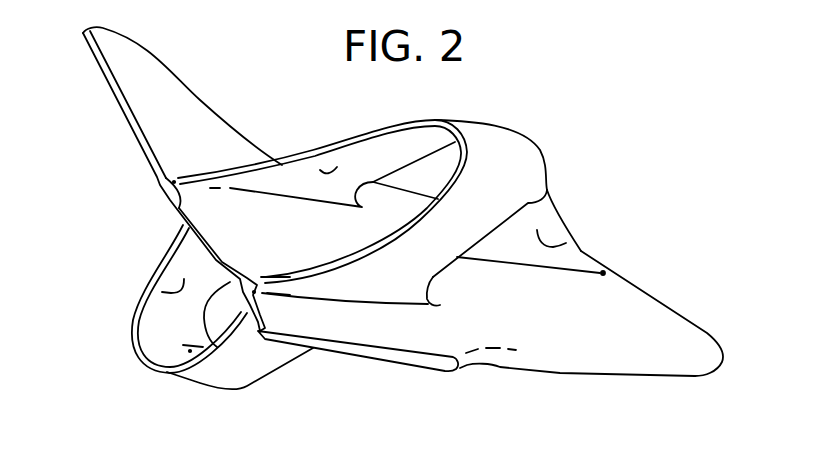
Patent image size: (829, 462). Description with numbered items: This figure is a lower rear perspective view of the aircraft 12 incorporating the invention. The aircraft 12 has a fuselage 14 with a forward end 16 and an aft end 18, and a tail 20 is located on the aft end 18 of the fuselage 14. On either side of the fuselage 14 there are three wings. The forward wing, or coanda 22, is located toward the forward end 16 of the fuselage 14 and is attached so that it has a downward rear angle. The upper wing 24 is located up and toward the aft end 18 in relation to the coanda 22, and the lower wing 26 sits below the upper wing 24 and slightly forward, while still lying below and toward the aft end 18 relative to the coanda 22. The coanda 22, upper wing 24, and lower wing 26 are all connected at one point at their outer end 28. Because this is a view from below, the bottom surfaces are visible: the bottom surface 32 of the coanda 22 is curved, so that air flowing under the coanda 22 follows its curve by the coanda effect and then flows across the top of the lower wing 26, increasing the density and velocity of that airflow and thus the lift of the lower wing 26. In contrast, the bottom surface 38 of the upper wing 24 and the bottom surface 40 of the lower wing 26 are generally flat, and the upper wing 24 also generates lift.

The aircraft 12 is at (648, 155).
The fuselage 14 is at (598, 330).
The forward end 16 is at (725, 348).
The aft end 18 is at (176, 211).
The tail 20 is at (158, 74).
The coanda 22 is at (561, 216).
The upper wing 24 is at (373, 133).
The lower wing 26 is at (503, 220).
The outer end 28 is at (513, 140).
The bottom surface 32 is at (553, 247).
The bottom surface 38 is at (328, 173).
The bottom surface 40 is at (425, 257).